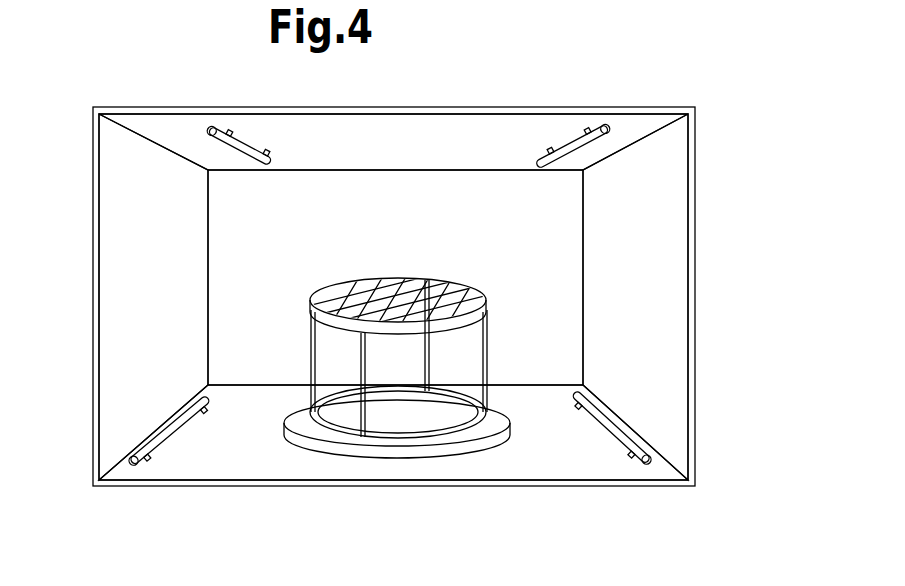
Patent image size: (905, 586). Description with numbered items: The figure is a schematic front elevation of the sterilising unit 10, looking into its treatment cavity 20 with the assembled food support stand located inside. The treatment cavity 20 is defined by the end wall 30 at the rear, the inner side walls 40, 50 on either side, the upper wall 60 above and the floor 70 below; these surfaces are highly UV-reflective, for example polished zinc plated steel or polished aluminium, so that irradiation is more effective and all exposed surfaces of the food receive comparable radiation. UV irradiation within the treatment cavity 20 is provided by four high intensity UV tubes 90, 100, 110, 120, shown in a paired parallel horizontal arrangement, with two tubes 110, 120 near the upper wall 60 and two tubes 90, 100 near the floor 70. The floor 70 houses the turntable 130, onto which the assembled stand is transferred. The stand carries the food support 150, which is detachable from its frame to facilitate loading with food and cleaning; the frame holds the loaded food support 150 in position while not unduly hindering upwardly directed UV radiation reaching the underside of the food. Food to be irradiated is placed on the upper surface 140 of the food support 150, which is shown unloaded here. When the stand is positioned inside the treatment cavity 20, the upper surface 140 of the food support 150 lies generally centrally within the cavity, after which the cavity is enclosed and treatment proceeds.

The sterilising unit 10 is at (722, 337).
The treatment cavity 20 is at (695, 425).
The end wall 30 is at (545, 218).
The inner side wall 40 is at (128, 366).
The inner side wall 50 is at (645, 380).
The upper wall 60 is at (465, 152).
The floor 70 is at (573, 443).
The high intensity UV tube 90 is at (162, 442).
The high intensity UV tube 100 is at (640, 452).
The high intensity UV tube 110 is at (600, 140).
The high intensity UV tube 120 is at (203, 112).
The turntable 130 is at (388, 448).
The upper surface 140 is at (352, 295).
The food support 150 is at (455, 286).